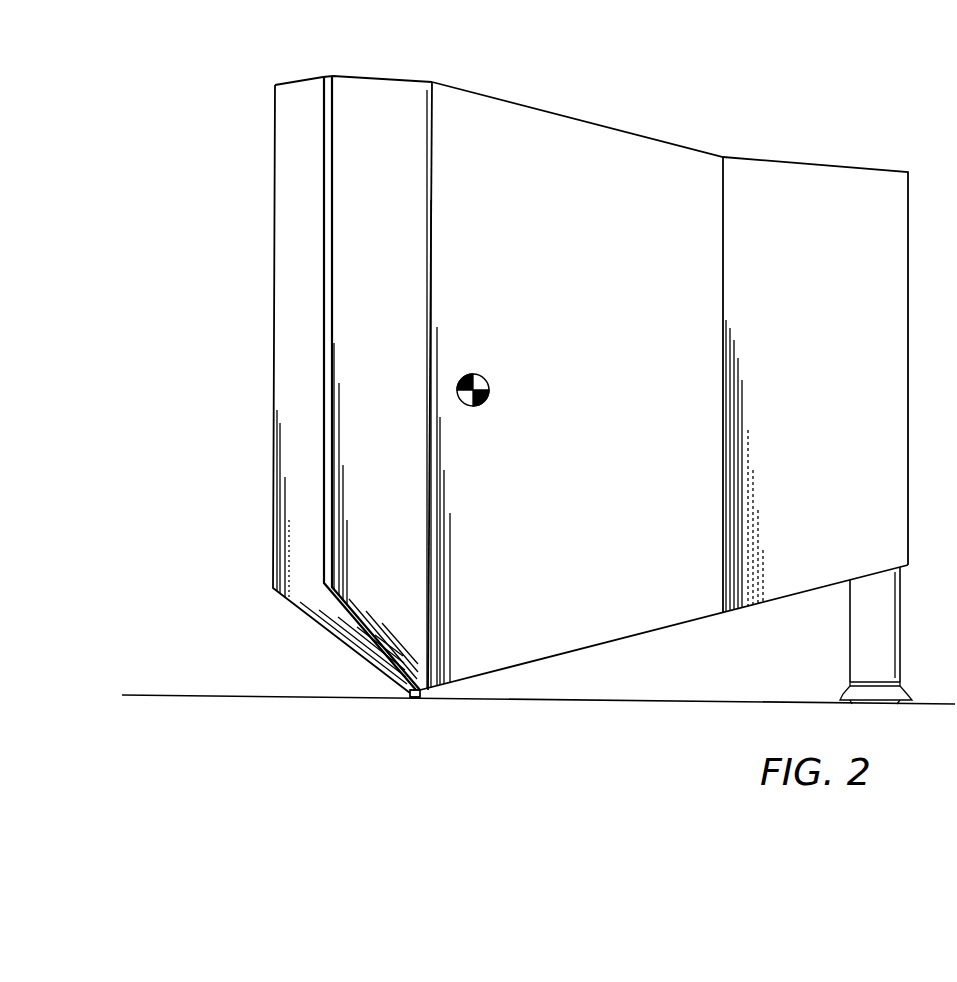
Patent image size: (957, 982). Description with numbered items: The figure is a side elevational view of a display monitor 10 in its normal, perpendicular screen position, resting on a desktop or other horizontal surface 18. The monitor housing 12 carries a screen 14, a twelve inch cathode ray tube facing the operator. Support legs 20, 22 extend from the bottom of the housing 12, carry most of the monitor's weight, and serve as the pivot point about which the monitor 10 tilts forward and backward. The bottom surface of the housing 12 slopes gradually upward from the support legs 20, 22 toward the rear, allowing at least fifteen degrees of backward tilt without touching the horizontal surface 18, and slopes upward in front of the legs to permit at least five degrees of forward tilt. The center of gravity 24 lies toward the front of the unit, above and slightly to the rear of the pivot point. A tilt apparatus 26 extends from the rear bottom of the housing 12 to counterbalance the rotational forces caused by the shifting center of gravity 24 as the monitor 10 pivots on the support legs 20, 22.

The display monitor 10 is at (748, 96).
The monitor housing 12 is at (494, 98).
The screen 14 is at (272, 240).
The horizontal surface 18 is at (180, 694).
The support leg 20 is at (424, 691).
The support leg 22 is at (485, 686).
The center of gravity 24 is at (484, 377).
The tilt apparatus 26 is at (901, 643).